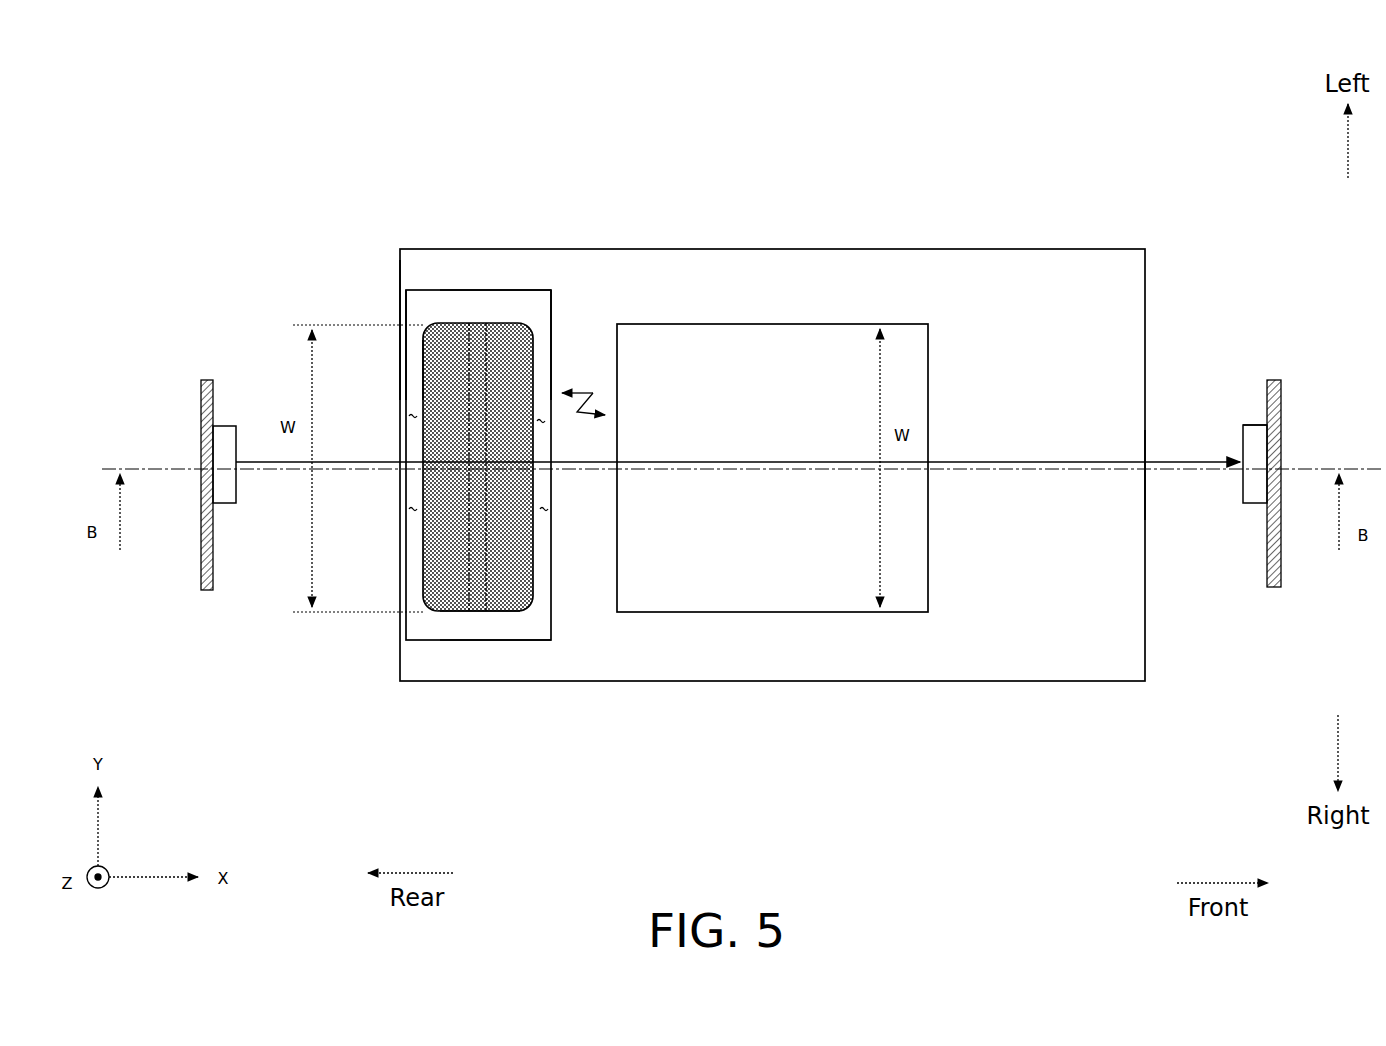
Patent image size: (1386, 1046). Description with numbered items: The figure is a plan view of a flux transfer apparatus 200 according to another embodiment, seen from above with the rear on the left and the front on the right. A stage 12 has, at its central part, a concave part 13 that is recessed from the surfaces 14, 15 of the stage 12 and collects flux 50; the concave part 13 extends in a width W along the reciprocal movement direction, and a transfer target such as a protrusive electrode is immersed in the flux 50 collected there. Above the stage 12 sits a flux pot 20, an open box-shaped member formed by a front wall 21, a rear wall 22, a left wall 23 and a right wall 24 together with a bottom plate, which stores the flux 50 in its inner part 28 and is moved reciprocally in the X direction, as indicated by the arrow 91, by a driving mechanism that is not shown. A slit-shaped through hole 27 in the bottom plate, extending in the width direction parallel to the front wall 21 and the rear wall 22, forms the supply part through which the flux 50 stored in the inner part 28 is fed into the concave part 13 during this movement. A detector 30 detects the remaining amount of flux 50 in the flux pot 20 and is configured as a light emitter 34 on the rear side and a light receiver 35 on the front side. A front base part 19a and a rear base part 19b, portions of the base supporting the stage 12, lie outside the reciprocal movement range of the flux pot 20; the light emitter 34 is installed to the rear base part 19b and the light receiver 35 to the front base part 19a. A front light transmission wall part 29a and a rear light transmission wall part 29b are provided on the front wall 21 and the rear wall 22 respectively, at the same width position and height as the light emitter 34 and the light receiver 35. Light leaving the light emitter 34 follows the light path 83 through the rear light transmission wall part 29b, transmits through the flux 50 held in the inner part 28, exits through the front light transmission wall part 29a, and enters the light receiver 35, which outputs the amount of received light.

The flux transfer apparatus 200 is at (84, 137).
The stage 12 is at (1150, 487).
The concave part 13 is at (850, 318).
The surface 14 is at (463, 273).
The surface 15 is at (1060, 272).
The front base part 19a is at (1277, 577).
The rear base part 19b is at (193, 593).
The flux pot 20 is at (400, 280).
The front wall 21 is at (552, 320).
The rear wall 22 is at (403, 308).
The left wall 23 is at (497, 290).
The right wall 24 is at (505, 643).
The through hole 27 is at (470, 612).
The inner part 28 is at (424, 393).
The front light transmission wall part 29a is at (538, 511).
The rear light transmission wall part 29b is at (420, 509).
The detector 30 is at (1240, 421).
The light emitter 34 is at (223, 423).
The light receiver 35 is at (1255, 423).
The flux 50 is at (508, 343).
The light path 83 is at (1163, 458).
The arrow 91 is at (582, 387).